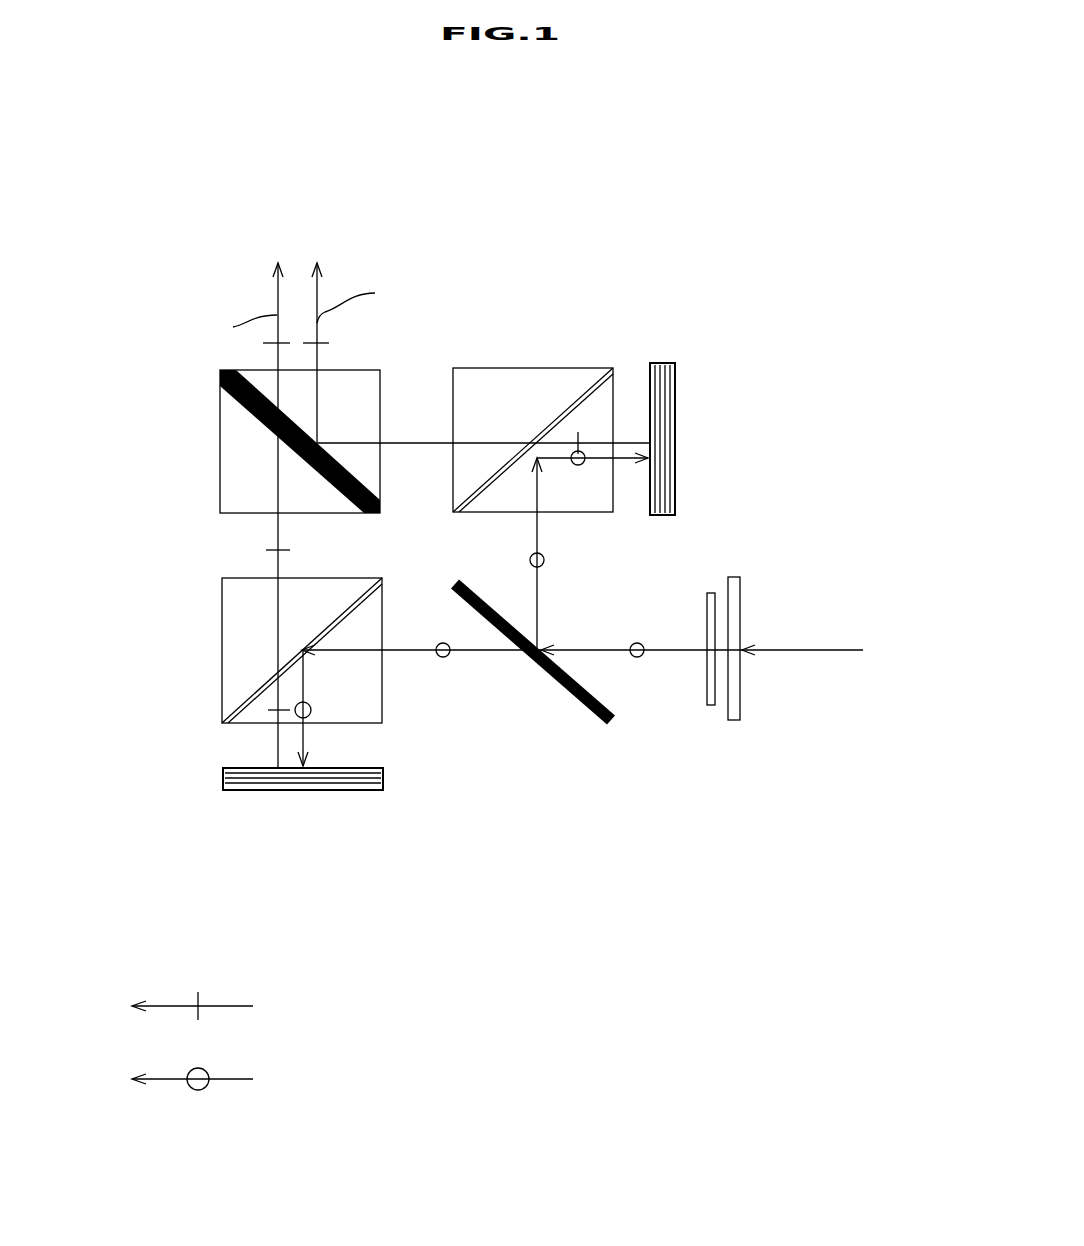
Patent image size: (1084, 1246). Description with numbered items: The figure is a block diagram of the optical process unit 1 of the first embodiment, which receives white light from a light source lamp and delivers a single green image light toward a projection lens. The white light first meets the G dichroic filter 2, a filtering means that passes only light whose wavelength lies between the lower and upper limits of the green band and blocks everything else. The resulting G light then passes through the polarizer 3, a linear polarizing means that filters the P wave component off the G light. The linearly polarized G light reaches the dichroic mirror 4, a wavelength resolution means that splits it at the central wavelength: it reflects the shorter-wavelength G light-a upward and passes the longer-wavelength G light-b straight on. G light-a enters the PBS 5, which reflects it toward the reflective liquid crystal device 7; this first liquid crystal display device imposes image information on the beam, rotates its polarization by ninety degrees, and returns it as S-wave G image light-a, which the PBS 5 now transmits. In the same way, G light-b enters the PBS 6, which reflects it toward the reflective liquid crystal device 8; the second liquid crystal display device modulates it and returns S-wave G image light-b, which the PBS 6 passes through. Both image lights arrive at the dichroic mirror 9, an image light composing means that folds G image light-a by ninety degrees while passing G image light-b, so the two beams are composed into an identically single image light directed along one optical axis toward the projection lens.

The optical process unit 1 is at (774, 204).
The G dichroic filter 2 is at (740, 593).
The polarizer 3 is at (712, 593).
The dichroic mirror 4 is at (598, 722).
The PBS 5 is at (557, 368).
The PBS 6 is at (222, 705).
The reflective liquid crystal device 7 is at (675, 412).
The reflective liquid crystal device 8 is at (357, 792).
The dichroic mirror 9 is at (220, 470).